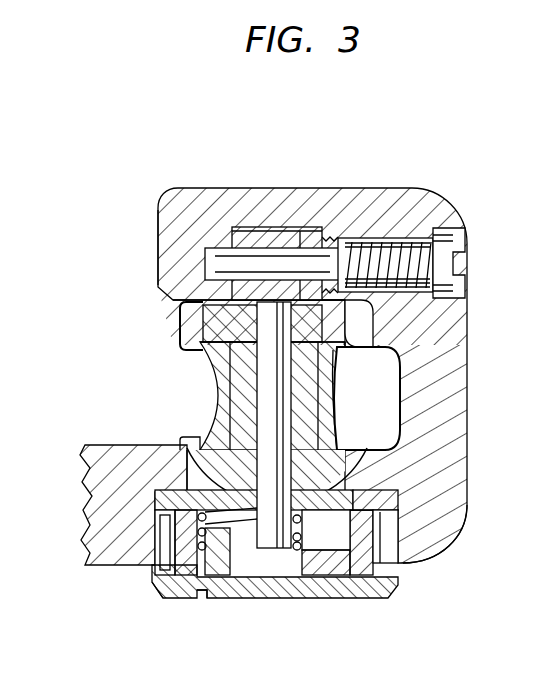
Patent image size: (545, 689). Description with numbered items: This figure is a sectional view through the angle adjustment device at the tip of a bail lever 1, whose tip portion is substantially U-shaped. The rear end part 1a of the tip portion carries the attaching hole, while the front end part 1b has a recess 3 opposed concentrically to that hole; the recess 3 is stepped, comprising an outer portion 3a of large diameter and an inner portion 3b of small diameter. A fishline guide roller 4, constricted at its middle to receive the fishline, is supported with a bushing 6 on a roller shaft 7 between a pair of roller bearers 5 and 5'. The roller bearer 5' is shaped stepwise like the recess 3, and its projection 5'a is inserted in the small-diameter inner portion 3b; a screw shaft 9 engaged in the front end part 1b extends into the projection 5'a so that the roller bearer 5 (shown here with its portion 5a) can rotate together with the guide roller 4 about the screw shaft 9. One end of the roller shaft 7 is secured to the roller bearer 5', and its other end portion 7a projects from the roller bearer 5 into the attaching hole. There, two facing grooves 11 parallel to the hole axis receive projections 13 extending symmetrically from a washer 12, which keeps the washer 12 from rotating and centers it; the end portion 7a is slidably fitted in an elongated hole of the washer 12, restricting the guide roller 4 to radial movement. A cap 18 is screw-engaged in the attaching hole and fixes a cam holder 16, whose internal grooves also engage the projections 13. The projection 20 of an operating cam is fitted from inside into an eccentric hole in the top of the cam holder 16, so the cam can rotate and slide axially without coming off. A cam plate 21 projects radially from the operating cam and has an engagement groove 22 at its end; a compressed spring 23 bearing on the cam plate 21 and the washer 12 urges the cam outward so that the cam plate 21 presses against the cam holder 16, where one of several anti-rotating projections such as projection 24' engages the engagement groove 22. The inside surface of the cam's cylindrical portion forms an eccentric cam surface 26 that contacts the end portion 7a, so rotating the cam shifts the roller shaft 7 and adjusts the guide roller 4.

The bail lever 1 is at (370, 188).
The rear end part 1a is at (440, 530).
The front end part 1b is at (160, 226).
The recess 3 is at (185, 298).
The outer portion 3a is at (367, 325).
The inner portion 3b is at (262, 230).
The fishline guide roller 4 is at (335, 375).
The roller bearer 5 is at (256, 456).
The roller bearer 5' is at (160, 326).
The seat flange 5a is at (185, 455).
The projection 5'a is at (316, 223).
The bushing 6 is at (312, 402).
The roller shaft 7 is at (262, 392).
The end portion of roller shaft 7a is at (276, 556).
The screw shaft 9 is at (425, 252).
The grooves 11 is at (170, 565).
The washer 12 is at (390, 478).
The projections 13 is at (170, 498).
The cam holder 16 is at (205, 598).
The cap 18 is at (165, 598).
The projection 20 is at (253, 583).
The cam plate 21 is at (332, 575).
The engagement groove 22 is at (350, 570).
The compressed spring 23 is at (160, 530).
The anti-rotating projection 24' is at (387, 578).
The eccentric cam surface 26 is at (240, 565).